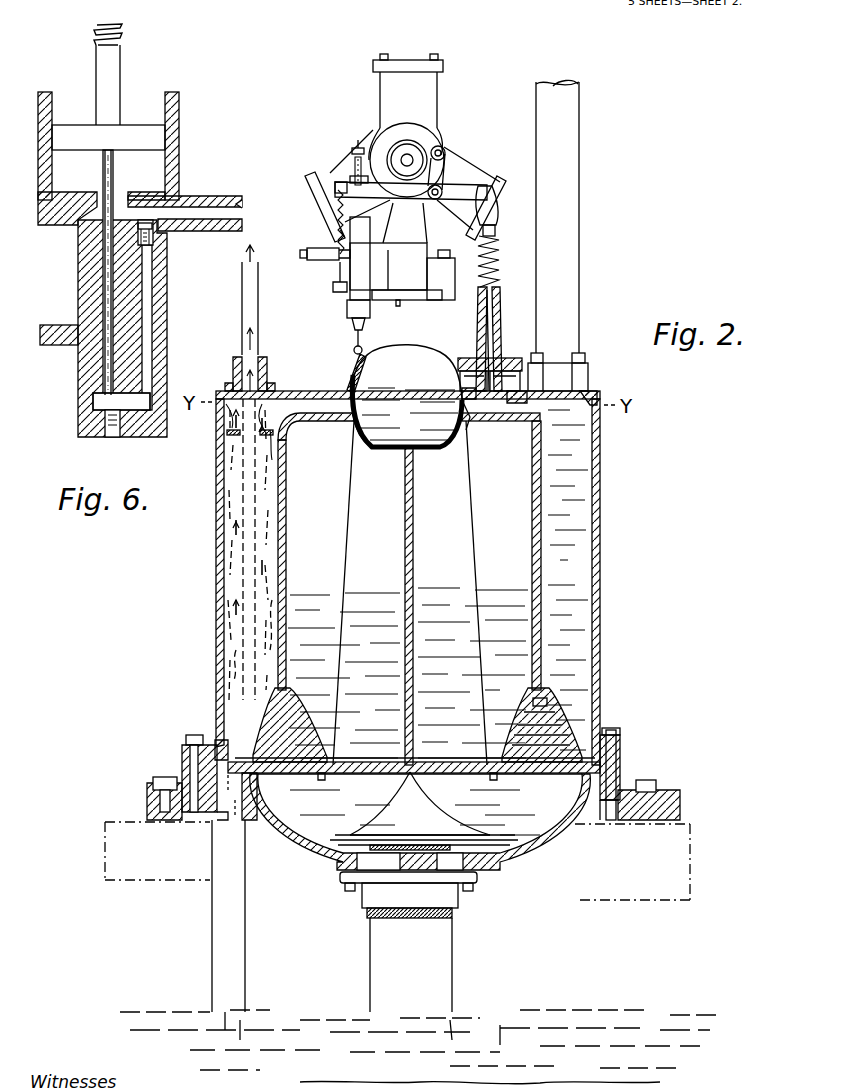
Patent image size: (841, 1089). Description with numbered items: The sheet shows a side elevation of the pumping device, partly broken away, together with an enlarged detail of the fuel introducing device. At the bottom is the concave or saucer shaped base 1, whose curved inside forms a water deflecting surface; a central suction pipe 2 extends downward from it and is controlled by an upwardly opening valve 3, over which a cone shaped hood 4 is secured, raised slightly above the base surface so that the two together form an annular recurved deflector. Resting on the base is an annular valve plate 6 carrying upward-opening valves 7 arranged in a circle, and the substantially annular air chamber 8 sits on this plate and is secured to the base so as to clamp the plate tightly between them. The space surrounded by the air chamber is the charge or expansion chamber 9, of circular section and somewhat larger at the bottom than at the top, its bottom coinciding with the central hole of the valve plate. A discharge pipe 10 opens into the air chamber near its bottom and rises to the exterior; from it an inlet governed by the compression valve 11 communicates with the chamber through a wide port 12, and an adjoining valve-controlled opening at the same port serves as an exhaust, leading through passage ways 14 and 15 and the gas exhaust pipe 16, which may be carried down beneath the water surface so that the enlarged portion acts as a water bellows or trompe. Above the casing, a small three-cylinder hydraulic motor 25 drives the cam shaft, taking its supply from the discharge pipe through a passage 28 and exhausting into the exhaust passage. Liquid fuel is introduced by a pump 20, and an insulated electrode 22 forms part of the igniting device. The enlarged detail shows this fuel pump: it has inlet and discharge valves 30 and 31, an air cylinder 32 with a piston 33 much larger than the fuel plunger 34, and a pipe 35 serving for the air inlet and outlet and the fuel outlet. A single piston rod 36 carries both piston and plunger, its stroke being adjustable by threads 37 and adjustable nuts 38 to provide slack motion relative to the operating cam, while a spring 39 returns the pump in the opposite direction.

In FIG. 2, the concave or saucer shaped base 1 is at (523, 857).
In FIG. 2, the suction pipe 2 is at (458, 975).
In FIG. 2, the upwardly opening valve 3 is at (462, 890).
In FIG. 2, the cone shaped hood 4 is at (420, 803).
In FIG. 2, the valve plate 6 is at (610, 773).
In FIG. 2, the valves 7 is at (628, 714).
In FIG. 2, the air chamber 8 is at (408, 638).
In FIG. 2, the charge or expansion chamber 9 is at (425, 606).
In FIG. 2, the discharge pipe 10 is at (582, 242).
In FIG. 2, the compression valve 11 is at (505, 330).
In FIG. 2, the port 12 is at (425, 373).
In FIG. 2, the exhaust passage way 14 is at (302, 393).
In FIG. 2, the enlarged exhaust passage 15 is at (222, 597).
In FIG. 2, the gas exhaust pipe 16 is at (262, 318).
In FIG. 2, the fuel pump 20 is at (350, 300).
In FIG. 2, the insulated electrode 22 is at (324, 264).
In FIG. 2, the hydraulic motor 25 is at (418, 147).
In FIG. 2, the passage 28 is at (502, 432).
In FIG. 6, the inlet valve 30 is at (121, 415).
In FIG. 6, the discharge valve 31 is at (146, 226).
In FIG. 6, the air cylinder 32 is at (183, 160).
In FIG. 6, the piston 33 is at (108, 138).
In FIG. 6, the fuel plunger 34 is at (104, 175).
In FIG. 6, the pipe 35 is at (205, 228).
In FIG. 6, the piston rod 36 is at (125, 68).
In FIG. 2, the threads 37 is at (353, 153).
In FIG. 6, the threads 37 is at (130, 30).
In FIG. 2, the adjustable nuts 38 is at (345, 175).
In FIG. 2, the spring 39 is at (345, 242).